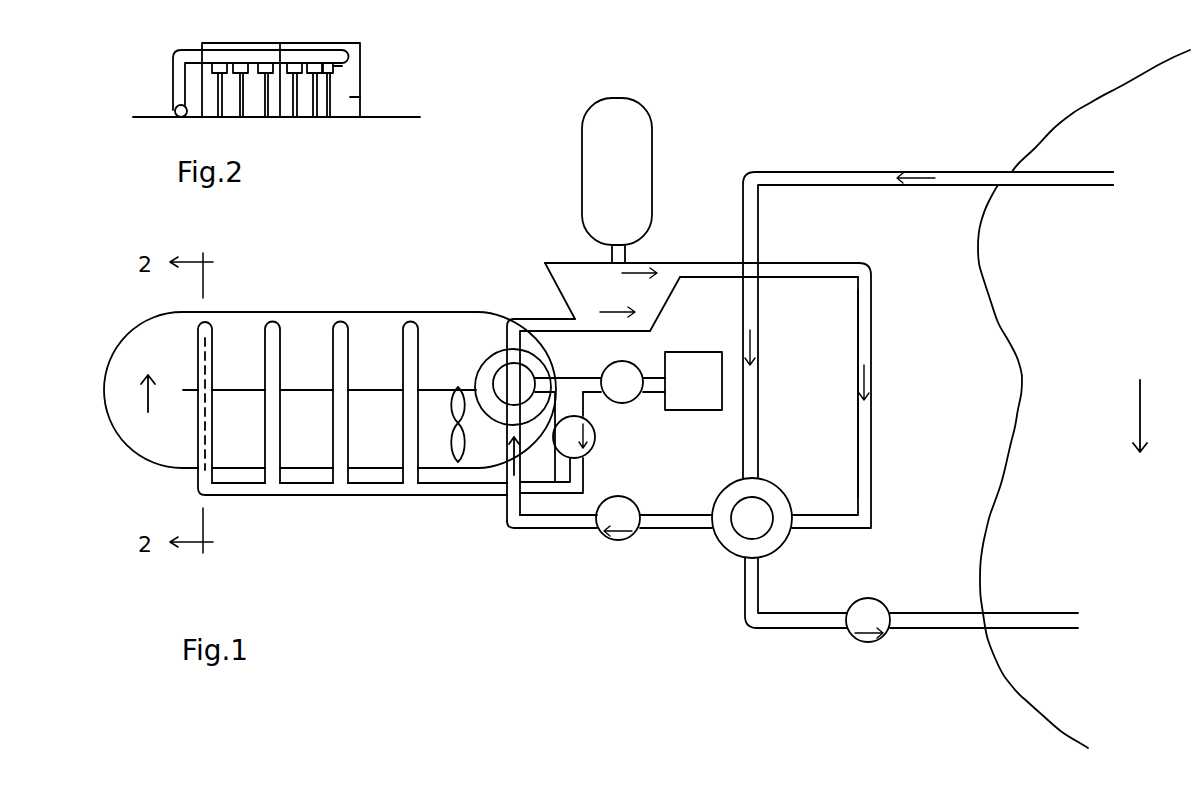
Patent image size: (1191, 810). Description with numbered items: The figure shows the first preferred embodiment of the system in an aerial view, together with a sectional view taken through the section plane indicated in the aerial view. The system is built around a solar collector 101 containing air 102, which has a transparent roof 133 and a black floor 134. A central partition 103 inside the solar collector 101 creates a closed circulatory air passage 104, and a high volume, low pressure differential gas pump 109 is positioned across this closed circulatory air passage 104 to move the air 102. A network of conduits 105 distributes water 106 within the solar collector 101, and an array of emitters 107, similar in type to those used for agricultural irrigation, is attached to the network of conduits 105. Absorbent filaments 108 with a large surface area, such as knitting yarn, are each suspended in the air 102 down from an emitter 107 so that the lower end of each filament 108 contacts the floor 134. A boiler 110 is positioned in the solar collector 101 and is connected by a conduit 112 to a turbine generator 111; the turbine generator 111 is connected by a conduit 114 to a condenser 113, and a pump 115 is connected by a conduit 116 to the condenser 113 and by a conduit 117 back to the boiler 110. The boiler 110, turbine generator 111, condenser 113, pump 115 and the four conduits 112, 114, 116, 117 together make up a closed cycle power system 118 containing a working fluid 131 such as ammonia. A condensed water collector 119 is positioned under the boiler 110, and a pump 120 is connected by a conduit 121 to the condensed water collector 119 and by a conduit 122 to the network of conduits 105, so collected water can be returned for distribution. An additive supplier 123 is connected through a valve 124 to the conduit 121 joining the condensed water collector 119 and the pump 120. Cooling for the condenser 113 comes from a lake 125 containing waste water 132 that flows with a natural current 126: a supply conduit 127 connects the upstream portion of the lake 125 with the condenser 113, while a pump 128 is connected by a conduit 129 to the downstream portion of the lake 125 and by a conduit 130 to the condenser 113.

In FIG. 1, the solar collector 101 is at (104, 382).
In FIG. 2, the solar collector 101 is at (362, 44).
In FIG. 1, the air 102 is at (445, 333).
In FIG. 2, the air 102 is at (342, 108).
In FIG. 1, the central partition 103 is at (303, 390).
In FIG. 2, the central partition 103 is at (280, 108).
In FIG. 1, the closed circulatory air passage 104 is at (150, 428).
In FIG. 1, the network of conduits 105 is at (405, 322).
In FIG. 2, the network of conduits 105 is at (310, 50).
In FIG. 1, the water 106 is at (275, 447).
In FIG. 2, the water 106 is at (245, 58).
In FIG. 2, the emitters 107 is at (335, 67).
In FIG. 2, the absorbent filaments 108 is at (330, 97).
In FIG. 1, the gas pump 109 is at (445, 414).
In FIG. 1, the boiler 110 is at (532, 373).
In FIG. 1, the turbine generator 111 is at (640, 263).
In FIG. 1, the conduit 112 is at (522, 318).
In FIG. 1, the condenser 113 is at (768, 505).
In FIG. 1, the conduit 114 is at (871, 328).
In FIG. 1, the pump 115 is at (637, 502).
In FIG. 1, the conduit 116 is at (672, 528).
In FIG. 1, the conduit 117 is at (508, 530).
In FIG. 1, the closed cycle power system 118 is at (777, 263).
In FIG. 1, the condensed water collector 119 is at (488, 354).
In FIG. 1, the pump 120 is at (596, 437).
In FIG. 1, the conduit 121 is at (587, 402).
In FIG. 1, the conduit 122 is at (303, 497).
In FIG. 1, the additive supplier 123 is at (693, 381).
In FIG. 1, the valve 124 is at (631, 365).
In FIG. 1, the lake 125 is at (1157, 66).
In FIG. 1, the natural current 126 is at (1161, 416).
In FIG. 1, the supply conduit 127 is at (813, 172).
In FIG. 1, the pump 128 is at (865, 598).
In FIG. 1, the conduit 129 is at (930, 613).
In FIG. 1, the conduit 130 is at (790, 613).
In FIG. 1, the working fluid 131 is at (502, 380).
In FIG. 1, the waste water 132 is at (1190, 177).
In FIG. 2, the transparent roof 133 is at (218, 43).
In FIG. 2, the black floor 134 is at (258, 117).